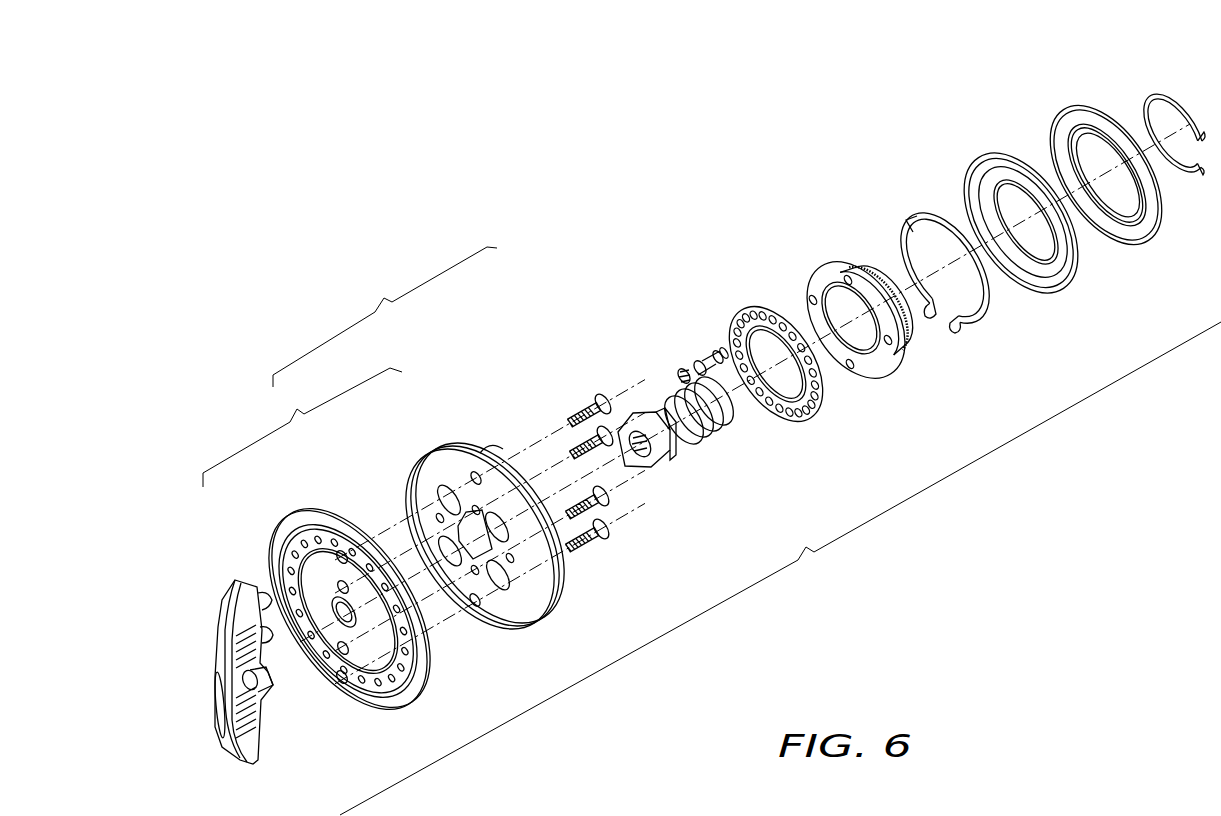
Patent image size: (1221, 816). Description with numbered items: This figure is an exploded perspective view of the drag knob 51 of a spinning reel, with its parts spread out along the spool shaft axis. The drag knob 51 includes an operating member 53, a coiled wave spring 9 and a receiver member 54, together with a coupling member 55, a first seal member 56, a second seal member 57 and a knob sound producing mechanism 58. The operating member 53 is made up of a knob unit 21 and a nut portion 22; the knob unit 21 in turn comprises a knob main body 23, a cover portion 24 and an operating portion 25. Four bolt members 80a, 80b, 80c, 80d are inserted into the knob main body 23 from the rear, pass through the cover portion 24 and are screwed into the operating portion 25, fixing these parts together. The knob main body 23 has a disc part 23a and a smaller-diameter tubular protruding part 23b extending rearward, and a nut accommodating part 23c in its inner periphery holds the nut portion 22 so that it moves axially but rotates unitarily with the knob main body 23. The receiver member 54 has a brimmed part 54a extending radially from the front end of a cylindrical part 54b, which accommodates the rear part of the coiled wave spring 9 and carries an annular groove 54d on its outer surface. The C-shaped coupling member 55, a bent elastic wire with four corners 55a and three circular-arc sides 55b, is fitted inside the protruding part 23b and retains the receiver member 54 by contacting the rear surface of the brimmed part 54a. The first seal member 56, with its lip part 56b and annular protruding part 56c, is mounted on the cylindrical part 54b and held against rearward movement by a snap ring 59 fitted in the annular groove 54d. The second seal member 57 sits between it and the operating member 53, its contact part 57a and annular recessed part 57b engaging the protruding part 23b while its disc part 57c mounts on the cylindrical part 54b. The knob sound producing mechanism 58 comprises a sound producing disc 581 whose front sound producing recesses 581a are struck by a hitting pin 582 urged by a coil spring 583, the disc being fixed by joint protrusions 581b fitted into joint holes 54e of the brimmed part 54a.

The coiled wave spring 9 is at (633, 393).
The knob unit 21 is at (302, 427).
The nut portion 22 is at (637, 423).
The knob main body 23 is at (472, 512).
The disc part 23a is at (453, 443).
The protruding part 23b is at (515, 460).
The nut accommodating part 23c is at (437, 540).
The cover portion 24 is at (308, 507).
The operating portion 25 is at (238, 575).
The drag knob 51 is at (780, 568).
The operating member 53 is at (385, 317).
The receiver member 54 is at (859, 313).
The brimmed part 54a is at (843, 267).
The cylindrical part 54b is at (873, 270).
The annular groove 54d is at (883, 343).
The joint holes 54e is at (883, 348).
The coupling member 55 is at (948, 247).
The corners 55a is at (913, 217).
The circular-arc sides 55b is at (905, 215).
The first seal member 56 is at (1117, 215).
The lip part 56b is at (1122, 242).
The annular protruding part 56c is at (1092, 212).
The second seal member 57 is at (1032, 228).
The contact part 57a is at (1008, 182).
The annular recessed part 57b is at (1058, 290).
The disc part 57c is at (1010, 165).
The knob sound producing mechanism 58 is at (669, 325).
The sound producing disc 581 is at (752, 310).
The sound producing recesses 581a is at (735, 323).
The joint protrusions 581b is at (780, 307).
The hitting pin 582 is at (708, 352).
The coil spring 583 is at (677, 377).
The snap ring 59 is at (1186, 172).
The bolt member 80a is at (600, 396).
The bolt member 80b is at (616, 536).
The bolt member 80c is at (612, 460).
The bolt member 80d is at (614, 502).